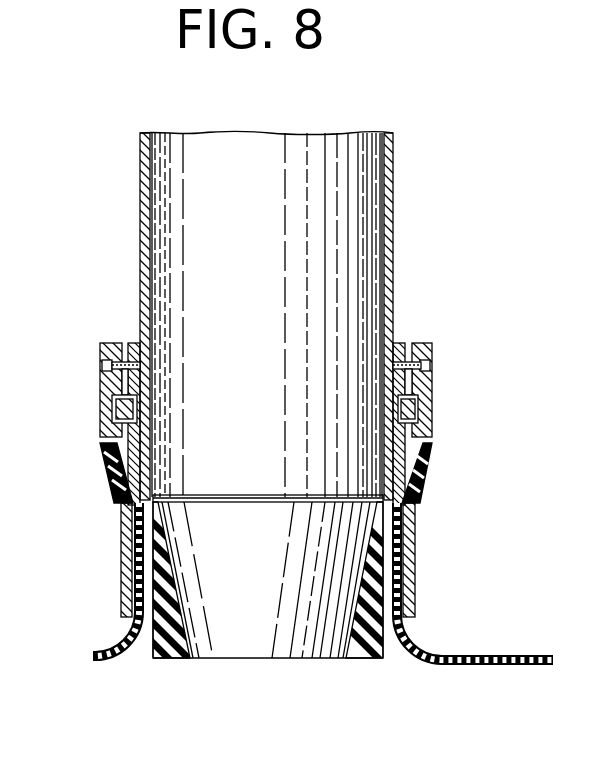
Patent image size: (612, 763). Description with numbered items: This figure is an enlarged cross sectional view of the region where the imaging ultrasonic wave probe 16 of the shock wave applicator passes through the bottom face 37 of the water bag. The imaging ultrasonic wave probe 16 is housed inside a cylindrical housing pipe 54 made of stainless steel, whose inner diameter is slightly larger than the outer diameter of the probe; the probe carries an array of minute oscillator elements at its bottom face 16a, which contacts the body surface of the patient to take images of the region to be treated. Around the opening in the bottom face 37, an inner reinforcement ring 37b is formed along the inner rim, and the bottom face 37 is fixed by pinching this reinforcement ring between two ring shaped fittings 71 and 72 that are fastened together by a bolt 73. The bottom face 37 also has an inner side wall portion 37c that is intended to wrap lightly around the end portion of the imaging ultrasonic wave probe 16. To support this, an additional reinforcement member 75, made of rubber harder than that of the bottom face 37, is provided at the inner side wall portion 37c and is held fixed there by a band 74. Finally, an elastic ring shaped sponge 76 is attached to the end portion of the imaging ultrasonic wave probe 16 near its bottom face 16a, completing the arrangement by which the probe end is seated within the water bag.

The imaging ultrasonic wave probe 16 is at (265, 133).
The bottom face of the imaging ultrasonic wave probe 16a is at (198, 664).
The housing pipe 54 is at (393, 176).
The ring shaped fitting 71 is at (400, 343).
The ring shaped fitting 72 is at (432, 346).
The bolt 73 is at (432, 367).
The inner reinforcement ring 37b is at (418, 410).
The inner side wall portion 37c is at (145, 562).
The band 74 is at (428, 472).
The additional reinforcement member 75 is at (415, 566).
The bottom face 37 is at (522, 656).
The elastic ring shaped sponge 76 is at (371, 660).